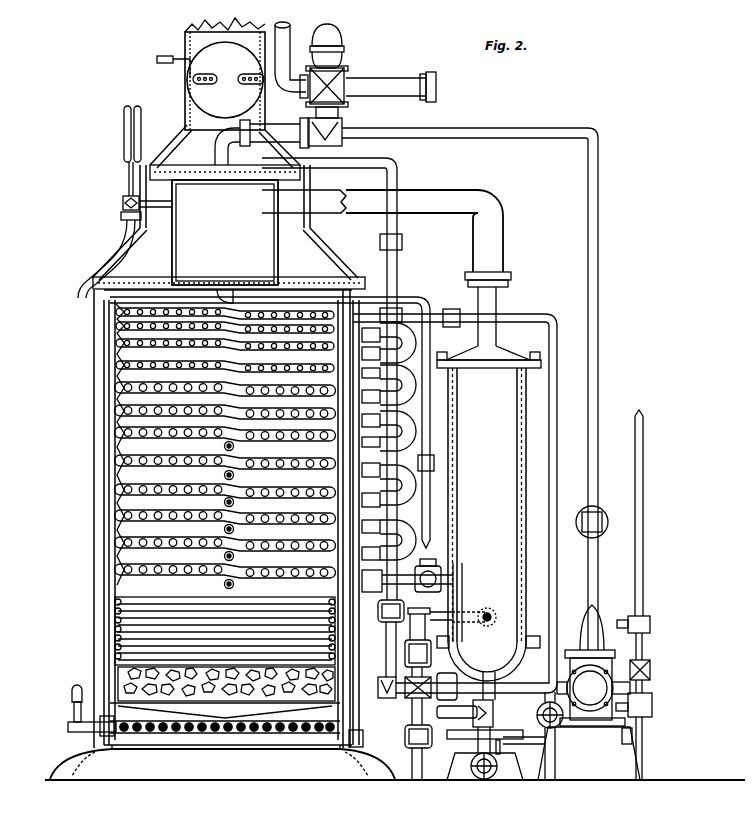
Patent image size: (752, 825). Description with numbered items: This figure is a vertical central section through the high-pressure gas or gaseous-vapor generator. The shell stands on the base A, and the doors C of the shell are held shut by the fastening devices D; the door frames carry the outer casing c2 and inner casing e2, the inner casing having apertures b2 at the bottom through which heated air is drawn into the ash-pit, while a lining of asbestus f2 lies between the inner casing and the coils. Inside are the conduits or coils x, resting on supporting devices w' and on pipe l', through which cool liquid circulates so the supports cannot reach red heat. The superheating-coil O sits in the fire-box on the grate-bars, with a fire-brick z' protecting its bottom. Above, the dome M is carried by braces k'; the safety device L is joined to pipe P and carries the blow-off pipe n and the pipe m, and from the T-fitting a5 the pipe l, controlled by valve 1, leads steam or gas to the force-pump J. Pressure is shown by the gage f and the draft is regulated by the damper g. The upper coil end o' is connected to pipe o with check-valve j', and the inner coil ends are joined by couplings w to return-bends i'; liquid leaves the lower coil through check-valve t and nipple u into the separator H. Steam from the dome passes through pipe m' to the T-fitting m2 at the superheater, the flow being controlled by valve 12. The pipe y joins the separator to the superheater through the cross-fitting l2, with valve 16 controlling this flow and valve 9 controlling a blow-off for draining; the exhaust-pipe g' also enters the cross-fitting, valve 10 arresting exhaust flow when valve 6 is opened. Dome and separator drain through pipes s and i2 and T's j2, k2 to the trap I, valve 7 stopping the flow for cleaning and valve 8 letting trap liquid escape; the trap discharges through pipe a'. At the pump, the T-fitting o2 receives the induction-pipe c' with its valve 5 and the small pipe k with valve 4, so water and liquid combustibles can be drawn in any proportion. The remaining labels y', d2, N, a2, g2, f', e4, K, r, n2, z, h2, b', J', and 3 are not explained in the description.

The base A is at (395, 762).
The base shoulders y' is at (220, 763).
The doors C is at (94, 576).
The T k2 is at (364, 523).
The conduits or coils x is at (225, 443).
The pipe or tubing l' is at (219, 513).
The outer casing c2 is at (115, 326).
The tube row d2 is at (115, 346).
The inner casing e2 is at (115, 376).
The lining of asbestus board or cement f2 is at (115, 411).
The supporting devices w' is at (92, 472).
The superheating-coil O is at (225, 631).
The fire-brick z' is at (226, 691).
The perforated bottom plate N is at (225, 718).
The plate a2 is at (328, 720).
The apertures b2 is at (324, 741).
The fastening devices D is at (74, 706).
The top bar g2 is at (229, 290).
The dome M is at (225, 225).
The braces k' is at (225, 202).
The pipe s is at (274, 415).
The coupling f' is at (431, 463).
The damper g is at (210, 74).
The blow-off pipe n is at (291, 60).
The safety device L is at (332, 50).
The pipe m is at (391, 82).
The T-fitting a5 is at (325, 132).
The pipe P is at (262, 139).
The pipe l is at (474, 381).
The valve 1 is at (598, 522).
The gage f is at (125, 202).
The pipe m' is at (338, 379).
The coupling e4 is at (402, 242).
The end of the upper coil o' is at (384, 308).
The vapor pipe K is at (393, 268).
The check-valve j' is at (455, 485).
The pipe o is at (484, 506).
The return-bends i' is at (389, 441).
The right-and-left couplings w is at (372, 478).
The separator H is at (489, 513).
The valve 10 is at (475, 682).
The nipple u is at (451, 602).
The pipe r is at (417, 572).
The check-valve t is at (428, 575).
The pipe y is at (452, 624).
The valve 12 is at (384, 612).
The T-fitting m2 is at (379, 649).
The valve n2 is at (381, 687).
The valve 16 is at (427, 656).
The cross-fitting l2 is at (413, 691).
The valve 9 is at (423, 723).
The pipe z is at (423, 764).
The trap I is at (484, 766).
The pipe i2 is at (448, 687).
The T j2 is at (489, 713).
The valve 5 is at (544, 702).
The plate h2 is at (485, 740).
The valve 7 is at (503, 746).
The pipe a' is at (567, 740).
The valve 8 is at (489, 766).
The valve 6 is at (555, 713).
The pipe b' is at (544, 736).
The exhaust-pipe g' is at (523, 700).
The force-pump J is at (595, 688).
The pump base J' is at (589, 753).
The outlet 3 is at (624, 686).
The induction-pipe c' is at (626, 734).
The small pipe k is at (636, 595).
The valve 4 is at (633, 619).
The T-fitting o2 is at (630, 658).